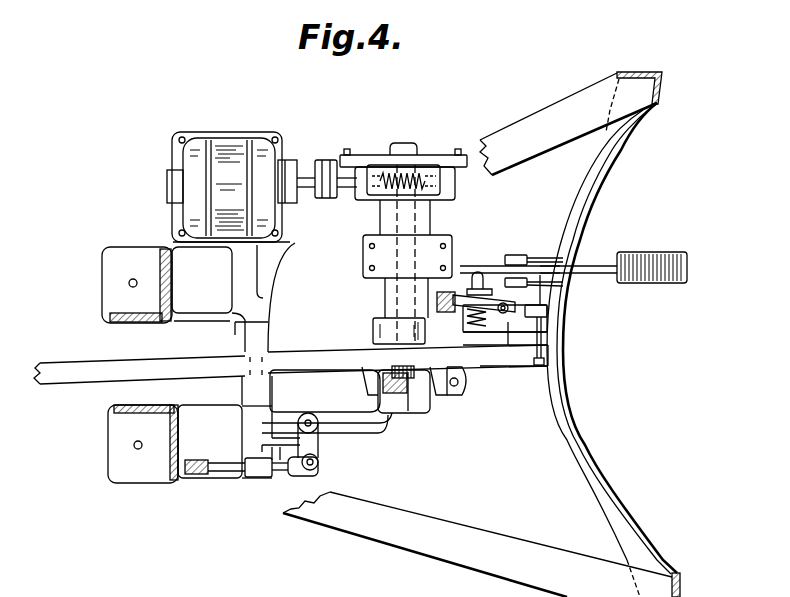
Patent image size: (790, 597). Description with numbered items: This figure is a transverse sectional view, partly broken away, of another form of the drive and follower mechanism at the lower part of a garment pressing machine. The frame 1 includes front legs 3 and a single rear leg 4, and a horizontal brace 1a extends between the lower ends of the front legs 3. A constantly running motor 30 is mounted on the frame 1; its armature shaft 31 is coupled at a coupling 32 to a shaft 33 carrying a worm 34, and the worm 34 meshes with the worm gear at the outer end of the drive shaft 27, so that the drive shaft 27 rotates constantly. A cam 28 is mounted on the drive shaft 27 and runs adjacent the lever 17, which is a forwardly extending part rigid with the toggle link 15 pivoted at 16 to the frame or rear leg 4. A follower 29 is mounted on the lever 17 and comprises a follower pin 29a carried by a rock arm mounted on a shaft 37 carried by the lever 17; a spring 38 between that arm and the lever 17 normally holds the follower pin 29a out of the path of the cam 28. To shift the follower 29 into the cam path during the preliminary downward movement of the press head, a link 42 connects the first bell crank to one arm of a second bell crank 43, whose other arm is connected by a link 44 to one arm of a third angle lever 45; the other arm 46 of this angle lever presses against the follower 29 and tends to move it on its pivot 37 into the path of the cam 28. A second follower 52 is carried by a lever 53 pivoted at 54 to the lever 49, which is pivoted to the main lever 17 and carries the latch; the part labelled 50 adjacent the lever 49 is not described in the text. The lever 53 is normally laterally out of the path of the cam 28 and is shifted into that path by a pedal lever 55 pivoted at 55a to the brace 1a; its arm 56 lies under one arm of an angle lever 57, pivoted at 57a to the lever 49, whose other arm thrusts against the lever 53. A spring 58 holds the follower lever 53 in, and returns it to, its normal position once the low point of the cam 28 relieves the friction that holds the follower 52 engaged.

The frame 1 is at (605, 148).
The horizontal brace 1a is at (578, 199).
The front legs 3 is at (663, 88).
The rear leg 4 is at (160, 413).
The second toggle link 15 is at (86, 372).
The pivot of toggle link 16 is at (250, 382).
The lever 17 is at (325, 358).
The drive shaft 27 is at (374, 318).
The cam 28 is at (372, 328).
The follower 29 is at (423, 396).
The follower pin 29a is at (381, 388).
The motor 30 is at (233, 150).
The armature shaft 31 is at (307, 176).
The coupling 32 is at (332, 158).
The shaft 33 is at (347, 195).
The worm 34 is at (421, 160).
The shaft 37 is at (459, 385).
The spring 38 is at (410, 372).
The link 42 is at (192, 475).
The second bell crank 43 is at (232, 471).
The link 44 is at (284, 476).
The third angle lever 45 is at (316, 450).
The arm 46 is at (387, 418).
The lever 49 is at (548, 351).
The base 50 is at (540, 371).
The follower 52 is at (444, 318).
The lever 53 is at (463, 290).
The pivot 54 is at (548, 306).
The pedal lever 55 is at (597, 262).
The pivot 55a is at (547, 258).
The arm 56 is at (538, 223).
The angle lever 57 is at (473, 286).
The pivot 57a is at (563, 287).
The spring 58 is at (480, 313).